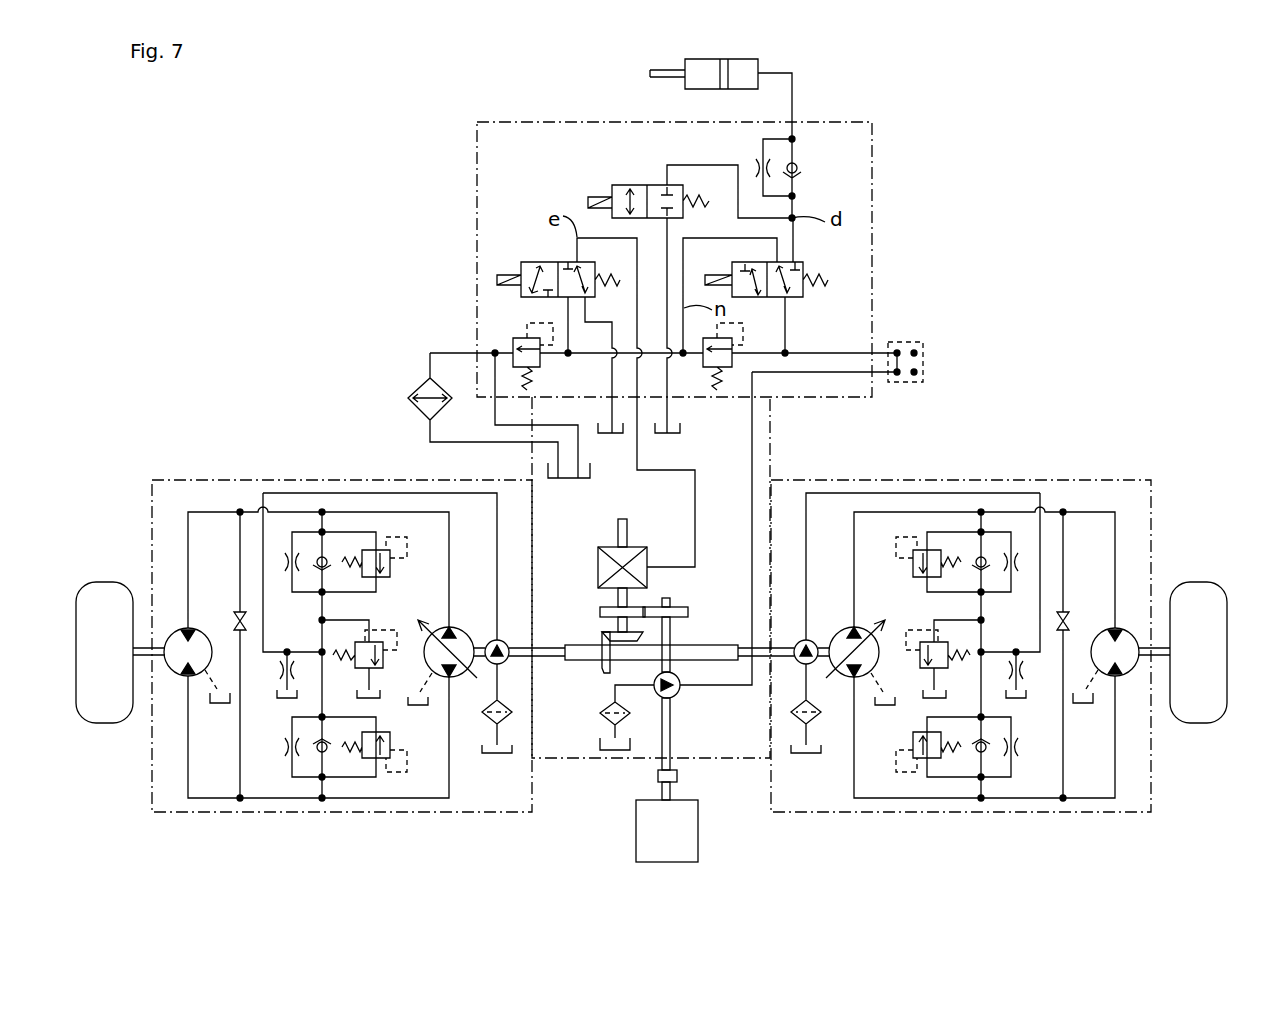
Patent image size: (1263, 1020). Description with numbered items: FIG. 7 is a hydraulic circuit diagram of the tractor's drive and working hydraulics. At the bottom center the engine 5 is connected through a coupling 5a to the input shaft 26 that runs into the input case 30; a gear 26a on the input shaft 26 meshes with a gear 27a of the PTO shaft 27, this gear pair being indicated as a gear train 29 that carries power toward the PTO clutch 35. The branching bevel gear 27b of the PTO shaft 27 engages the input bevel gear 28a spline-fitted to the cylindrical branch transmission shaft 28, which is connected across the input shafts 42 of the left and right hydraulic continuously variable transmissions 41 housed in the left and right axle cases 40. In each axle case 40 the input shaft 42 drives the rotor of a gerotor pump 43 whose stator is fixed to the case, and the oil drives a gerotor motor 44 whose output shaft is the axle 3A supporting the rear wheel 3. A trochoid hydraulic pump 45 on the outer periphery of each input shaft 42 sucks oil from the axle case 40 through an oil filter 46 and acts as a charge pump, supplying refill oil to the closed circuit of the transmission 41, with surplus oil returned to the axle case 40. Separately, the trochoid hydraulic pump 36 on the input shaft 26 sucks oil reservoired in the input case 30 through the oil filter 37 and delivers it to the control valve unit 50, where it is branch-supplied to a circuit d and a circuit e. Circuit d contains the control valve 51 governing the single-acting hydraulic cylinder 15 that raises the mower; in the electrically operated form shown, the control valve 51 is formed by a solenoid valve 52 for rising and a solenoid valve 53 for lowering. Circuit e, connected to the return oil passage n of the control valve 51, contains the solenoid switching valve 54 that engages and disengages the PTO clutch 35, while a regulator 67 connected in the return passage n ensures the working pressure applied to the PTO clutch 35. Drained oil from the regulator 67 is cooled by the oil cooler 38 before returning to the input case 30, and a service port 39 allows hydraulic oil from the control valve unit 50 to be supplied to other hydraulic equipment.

The rear wheel 3 is at (105, 723).
The axle 3A is at (140, 656).
The engine 5 is at (667, 831).
The coupling 5a is at (677, 782).
The hydraulic cylinder 15 is at (692, 90).
The input shaft 26 is at (672, 735).
The input gear 26a is at (686, 607).
The drive shaft 27 is at (630, 535).
The gear 27a is at (602, 607).
The branching bevel gear 27b is at (602, 636).
The branch transmission shaft 28 is at (700, 645).
The input bevel gear 28a is at (601, 665).
The gear train 29 is at (661, 595).
The input case 30 is at (771, 440).
The PTO clutch 35 is at (598, 560).
The hydraulic pump 36 is at (679, 691).
The oil filter 37 is at (598, 720).
The oil cooler 38 is at (410, 390).
The service port 39 is at (924, 358).
The axle case 40 is at (265, 480).
The hydraulic continuously variable transmission 41 is at (192, 488).
The input shaft 42 is at (500, 640).
The pump 43 is at (458, 630).
The motor 44 is at (200, 634).
The hydraulic pump 45 is at (500, 666).
The oil filter 46 is at (490, 738).
The control valve unit 50 is at (874, 172).
The control valve 51 is at (739, 288).
The valve for rising 52 is at (627, 185).
The valve for lowering 53 is at (828, 280).
The switching valve 54 is at (540, 262).
The regulator 67 is at (513, 345).